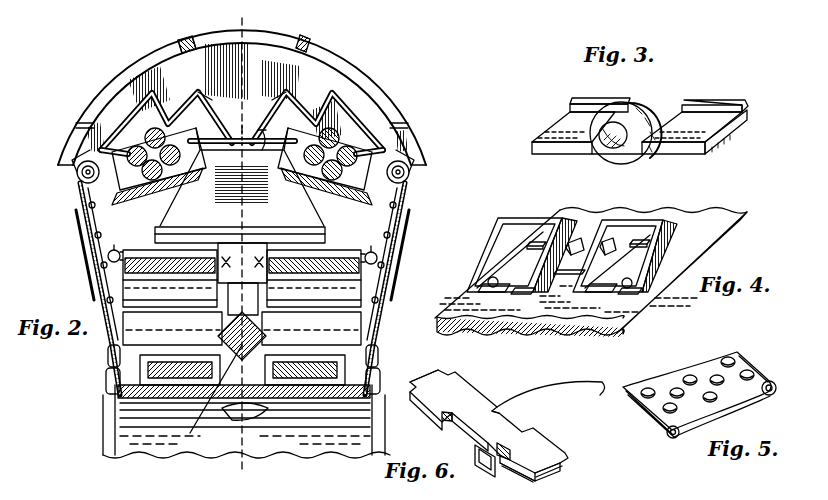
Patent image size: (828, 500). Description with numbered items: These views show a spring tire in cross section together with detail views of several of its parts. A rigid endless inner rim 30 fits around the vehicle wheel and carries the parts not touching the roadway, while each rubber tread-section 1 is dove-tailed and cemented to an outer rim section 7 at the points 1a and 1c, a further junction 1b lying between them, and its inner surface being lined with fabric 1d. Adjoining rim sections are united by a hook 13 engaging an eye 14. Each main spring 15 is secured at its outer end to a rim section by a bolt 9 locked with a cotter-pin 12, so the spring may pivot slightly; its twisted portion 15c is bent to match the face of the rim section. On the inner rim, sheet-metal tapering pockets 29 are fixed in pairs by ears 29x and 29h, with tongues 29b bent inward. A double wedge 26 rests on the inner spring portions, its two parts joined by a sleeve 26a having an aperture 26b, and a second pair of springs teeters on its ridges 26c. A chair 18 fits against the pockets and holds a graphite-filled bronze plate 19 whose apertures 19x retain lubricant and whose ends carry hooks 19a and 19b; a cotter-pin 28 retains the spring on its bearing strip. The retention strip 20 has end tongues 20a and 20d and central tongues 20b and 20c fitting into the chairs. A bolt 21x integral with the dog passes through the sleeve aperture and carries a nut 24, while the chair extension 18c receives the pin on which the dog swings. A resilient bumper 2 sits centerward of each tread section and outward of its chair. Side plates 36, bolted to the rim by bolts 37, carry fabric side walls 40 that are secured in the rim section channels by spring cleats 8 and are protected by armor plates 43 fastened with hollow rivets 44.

In FIG. 2, the tread-section 1 is at (265, 32).
In FIG. 2, the dove-tail connection of tread section 1a is at (242, 131).
In FIG. 2, the zigzag spring arm 1b is at (135, 113).
In FIG. 2, the dove-tail connection of tread section 1c is at (242, 127).
In FIG. 2, the fabric lining 1d is at (242, 100).
In FIG. 2, the resilient bumper 2 is at (240, 224).
In FIG. 2, the outer rim section 7 is at (262, 134).
In FIG. 2, the spring cleat 8 is at (80, 176).
In FIG. 2, the bolt 9 is at (240, 246).
In FIG. 2, the cotter-pin 12 is at (243, 132).
In FIG. 2, the hook 13 is at (150, 140).
In FIG. 2, the eye 14 is at (216, 164).
In FIG. 2, the main spring 15 is at (242, 317).
In FIG. 2, the twisted portion of main spring 15c is at (128, 203).
In FIG. 2, the chair 18 is at (242, 328).
In FIG. 2, the chair extension 18c is at (242, 336).
In FIG. 5, the graphite-filled bronze plate 19 is at (662, 384).
In FIG. 5, the hook 19a is at (676, 437).
In FIG. 5, the hook 19b is at (770, 396).
In FIG. 5, the apertures 19x is at (694, 378).
In FIG. 6, the retention bar or strip 20 is at (489, 426).
In FIG. 6, the end tongue 20a is at (568, 462).
In FIG. 6, the central tongue 20b is at (490, 475).
In FIG. 6, the central tongue 20c is at (548, 398).
In FIG. 6, the end tongue 20d is at (424, 378).
In FIG. 2, the bolt 21x is at (252, 326).
In FIG. 2, the nut 24 is at (223, 389).
In FIG. 3, the double wedge 26 is at (560, 132).
In FIG. 3, the sleeve 26a is at (640, 110).
In FIG. 3, the aperture 26b is at (611, 148).
In FIG. 3, the ridge 26c is at (574, 100).
In FIG. 2, the cotter-pin 28 is at (135, 252).
In FIG. 4, the tapering pocket 29 is at (488, 243).
In FIG. 4, the tongue 29b is at (575, 240).
In FIG. 4, the ear 29h is at (533, 242).
In FIG. 4, the ear 29x is at (468, 297).
In FIG. 2, the inner rim 30 is at (246, 421).
In FIG. 4, the inner rim 30 is at (716, 210).
In FIG. 2, the side ring or plate 36 is at (106, 352).
In FIG. 2, the bolt 37 is at (104, 380).
In FIG. 2, the fabric side wall 40 is at (90, 224).
In FIG. 2, the armor plate 43 is at (88, 266).
In FIG. 2, the hollow rivet 44 is at (98, 236).